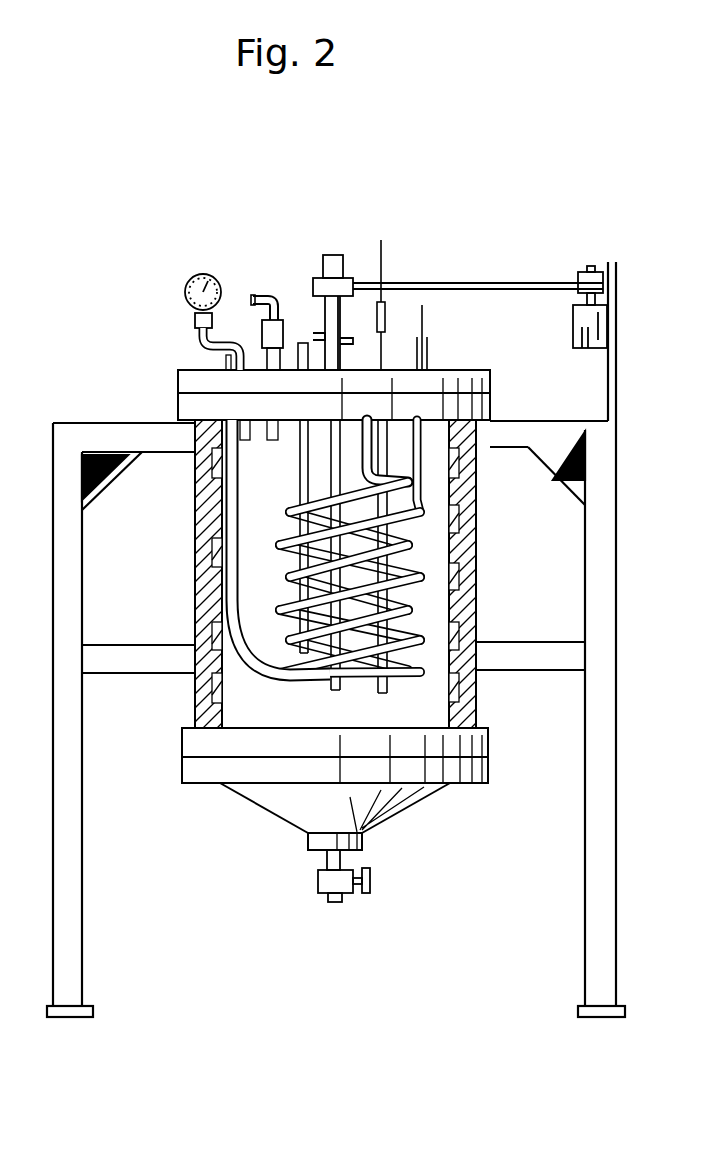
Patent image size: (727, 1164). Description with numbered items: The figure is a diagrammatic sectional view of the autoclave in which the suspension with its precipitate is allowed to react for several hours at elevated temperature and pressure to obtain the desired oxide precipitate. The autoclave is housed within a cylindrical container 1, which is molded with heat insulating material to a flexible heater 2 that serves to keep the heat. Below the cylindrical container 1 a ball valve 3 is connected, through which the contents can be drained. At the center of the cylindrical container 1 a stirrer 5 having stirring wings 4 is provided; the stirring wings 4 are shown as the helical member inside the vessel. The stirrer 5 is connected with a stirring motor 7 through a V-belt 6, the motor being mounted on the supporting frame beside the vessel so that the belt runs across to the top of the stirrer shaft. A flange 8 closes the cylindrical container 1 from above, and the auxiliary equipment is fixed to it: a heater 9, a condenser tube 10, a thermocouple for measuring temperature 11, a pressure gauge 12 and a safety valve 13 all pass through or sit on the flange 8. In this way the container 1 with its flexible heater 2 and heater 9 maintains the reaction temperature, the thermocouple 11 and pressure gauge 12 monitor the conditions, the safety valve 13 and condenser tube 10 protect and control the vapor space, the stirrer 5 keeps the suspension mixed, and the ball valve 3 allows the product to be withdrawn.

The cylindrical container 1 is at (203, 580).
The flexible heater 2 is at (193, 478).
The ball valve 3 is at (318, 880).
The stirring wings 4 is at (300, 650).
The stirrer 5 is at (333, 255).
The V-belt 6 is at (507, 290).
The stirring motor 7 is at (571, 333).
The flange 8 is at (178, 382).
The heater 9 is at (427, 318).
The condenser tube 10 is at (300, 337).
The thermocouple for measuring temperature 11 is at (385, 302).
The pressure gauge 12 is at (185, 292).
The safety valve 13 is at (257, 295).